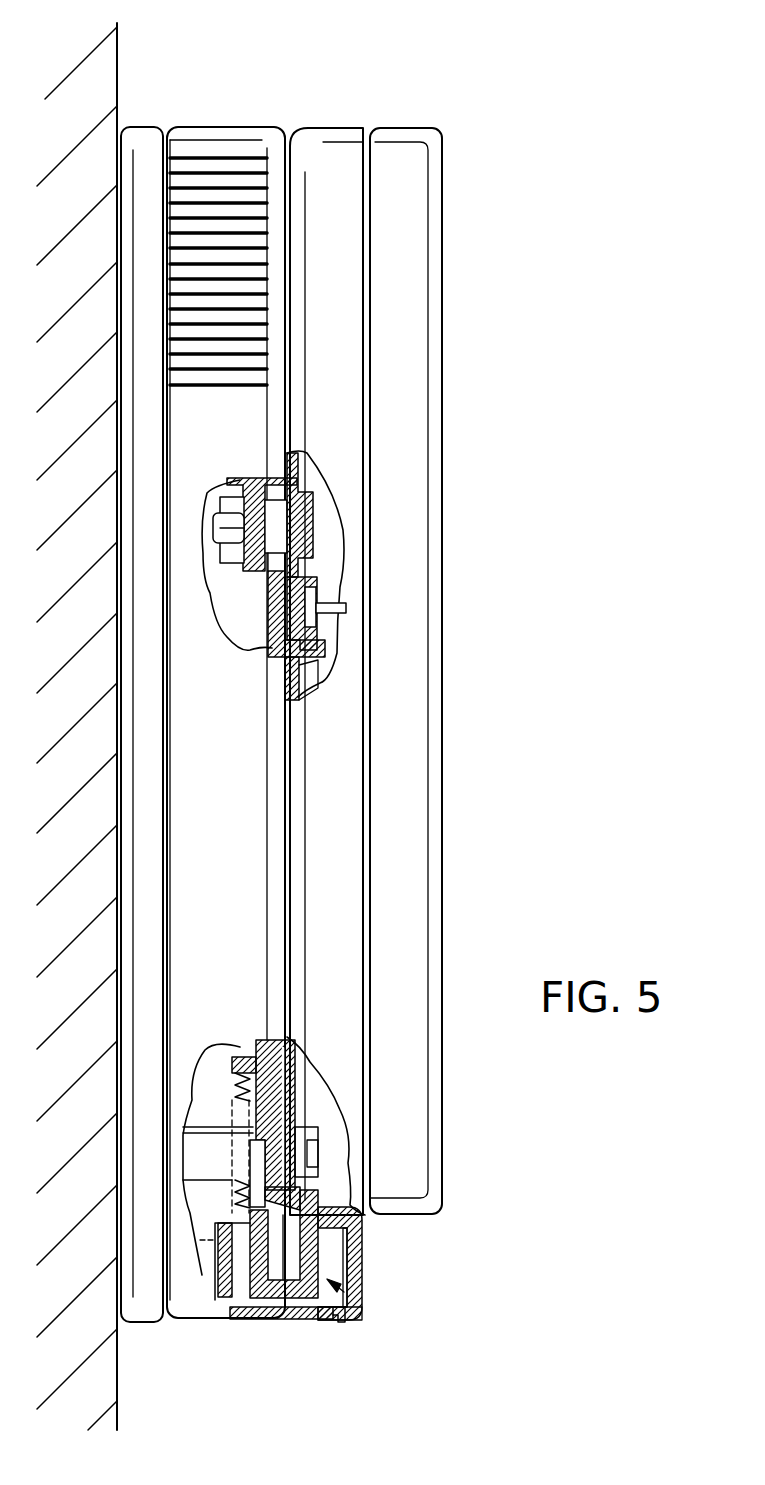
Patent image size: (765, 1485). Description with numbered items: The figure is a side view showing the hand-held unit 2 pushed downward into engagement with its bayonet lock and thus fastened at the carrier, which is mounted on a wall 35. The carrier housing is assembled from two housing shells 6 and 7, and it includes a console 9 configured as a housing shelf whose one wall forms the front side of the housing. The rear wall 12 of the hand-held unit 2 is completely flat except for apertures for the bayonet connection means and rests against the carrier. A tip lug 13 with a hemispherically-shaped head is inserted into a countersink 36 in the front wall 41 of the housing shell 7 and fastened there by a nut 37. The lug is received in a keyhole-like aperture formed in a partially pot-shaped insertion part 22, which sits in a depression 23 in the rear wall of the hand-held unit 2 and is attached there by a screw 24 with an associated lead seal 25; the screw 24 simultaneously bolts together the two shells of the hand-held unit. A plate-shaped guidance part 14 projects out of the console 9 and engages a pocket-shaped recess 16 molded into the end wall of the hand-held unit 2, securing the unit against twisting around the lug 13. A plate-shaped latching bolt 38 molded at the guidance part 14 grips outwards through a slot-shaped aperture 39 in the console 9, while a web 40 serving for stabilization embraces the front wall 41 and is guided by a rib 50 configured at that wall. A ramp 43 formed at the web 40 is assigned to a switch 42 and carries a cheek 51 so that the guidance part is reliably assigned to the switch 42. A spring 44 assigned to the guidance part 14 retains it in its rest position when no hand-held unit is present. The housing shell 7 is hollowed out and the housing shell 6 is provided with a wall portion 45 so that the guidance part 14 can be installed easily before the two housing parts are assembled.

The hand-held unit 2 is at (462, 822).
The housing shell 6 is at (143, 160).
The housing shell 7 is at (213, 150).
The console 9 is at (363, 1270).
The rear wall 12 is at (290, 1063).
The tip lug 13 is at (260, 477).
The guidance part 14 is at (363, 1303).
The pocket-shaped recess 16 is at (308, 1147).
The insertion part 22 is at (317, 687).
The depression 23 is at (317, 550).
The screw 24 is at (345, 607).
The lead seal 25 is at (327, 570).
The wall 35 is at (63, 478).
The countersink 36 is at (263, 570).
The nut 37 is at (235, 507).
The latching bolt 38 is at (347, 1253).
The slot-shaped aperture 39 is at (310, 1320).
The web 40 is at (253, 1167).
The front wall 41 is at (270, 647).
The switch 42 is at (207, 1273).
The ramp 43 is at (237, 1320).
The spring 44 is at (237, 1053).
The wall portion 45 is at (283, 1320).
The rib 50 is at (267, 1037).
The cheek 51 is at (215, 1287).